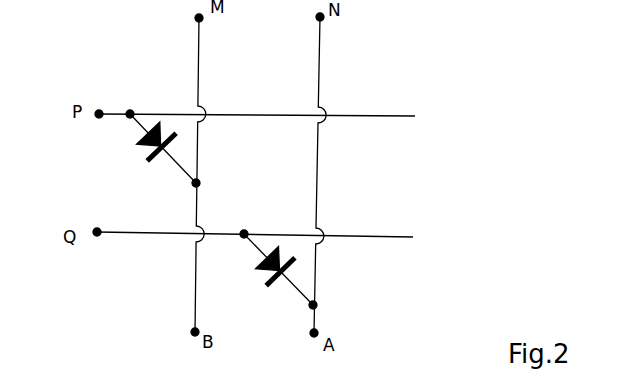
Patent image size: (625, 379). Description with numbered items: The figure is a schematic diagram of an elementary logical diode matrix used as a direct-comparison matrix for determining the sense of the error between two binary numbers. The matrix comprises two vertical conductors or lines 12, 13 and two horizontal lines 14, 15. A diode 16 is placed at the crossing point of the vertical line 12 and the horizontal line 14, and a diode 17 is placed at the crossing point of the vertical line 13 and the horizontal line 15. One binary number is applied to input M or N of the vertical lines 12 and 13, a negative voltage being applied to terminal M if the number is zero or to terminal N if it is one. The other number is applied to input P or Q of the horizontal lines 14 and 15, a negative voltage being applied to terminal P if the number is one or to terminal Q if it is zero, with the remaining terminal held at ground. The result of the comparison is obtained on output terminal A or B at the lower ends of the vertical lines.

The vertical conductor 12 is at (192, 278).
The vertical conductor 13 is at (322, 192).
The horizontal line 14 is at (370, 115).
The horizontal line 15 is at (368, 230).
The diode 16 is at (148, 148).
The diode 17 is at (273, 269).